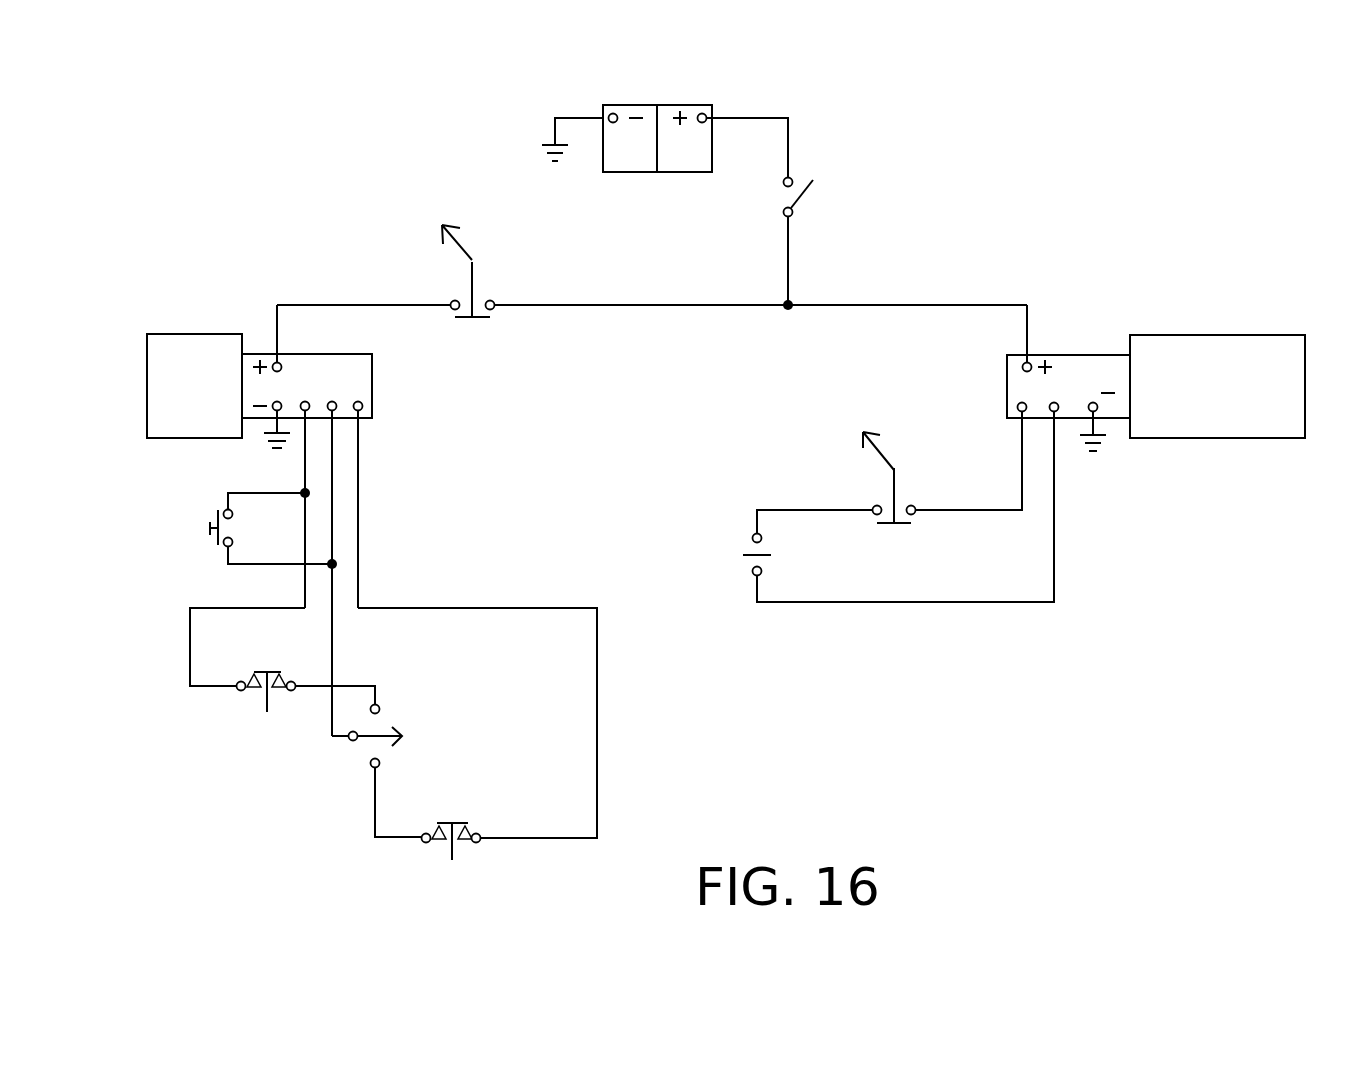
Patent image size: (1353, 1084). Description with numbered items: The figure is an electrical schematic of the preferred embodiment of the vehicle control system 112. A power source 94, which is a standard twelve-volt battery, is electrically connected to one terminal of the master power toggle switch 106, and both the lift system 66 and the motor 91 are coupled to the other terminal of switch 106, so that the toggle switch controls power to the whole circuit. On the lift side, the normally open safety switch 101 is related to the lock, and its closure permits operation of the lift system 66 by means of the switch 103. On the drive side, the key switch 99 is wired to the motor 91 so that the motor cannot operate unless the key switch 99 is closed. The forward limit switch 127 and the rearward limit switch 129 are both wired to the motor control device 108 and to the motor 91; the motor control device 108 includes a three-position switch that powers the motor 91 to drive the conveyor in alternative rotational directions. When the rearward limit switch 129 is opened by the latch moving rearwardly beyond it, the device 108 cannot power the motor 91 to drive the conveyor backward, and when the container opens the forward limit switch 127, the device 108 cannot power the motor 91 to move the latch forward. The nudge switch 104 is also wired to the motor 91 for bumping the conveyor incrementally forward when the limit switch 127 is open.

The lift system 66 is at (1232, 394).
The motor 91 is at (208, 394).
The power source 94 is at (646, 159).
The key switch 99 is at (472, 262).
The safety switch 101 is at (893, 466).
The switch 103 is at (743, 551).
The nudge switch 104 is at (208, 534).
The master power toggle switch 106 is at (808, 180).
The motor control device 108 is at (372, 739).
The vehicle control system 112 is at (1066, 132).
The forward limit switch 127 is at (266, 712).
The rearward limit switch 129 is at (454, 858).